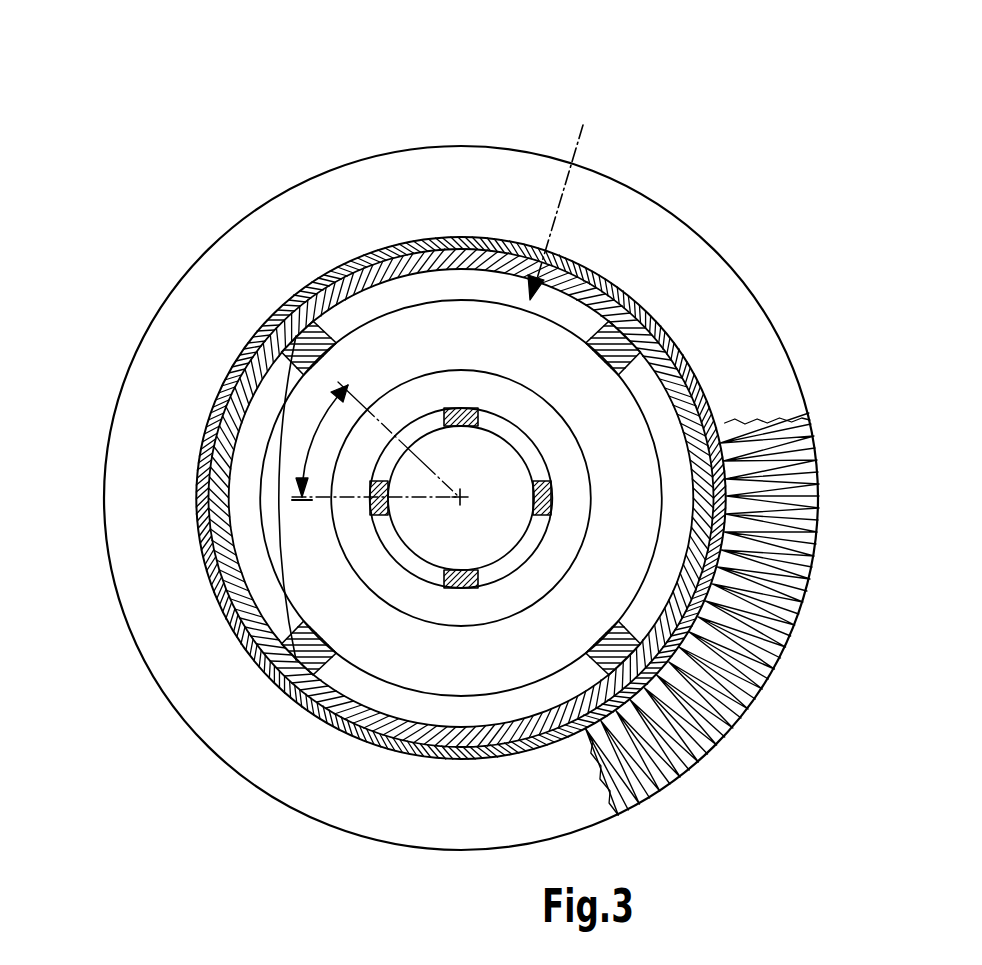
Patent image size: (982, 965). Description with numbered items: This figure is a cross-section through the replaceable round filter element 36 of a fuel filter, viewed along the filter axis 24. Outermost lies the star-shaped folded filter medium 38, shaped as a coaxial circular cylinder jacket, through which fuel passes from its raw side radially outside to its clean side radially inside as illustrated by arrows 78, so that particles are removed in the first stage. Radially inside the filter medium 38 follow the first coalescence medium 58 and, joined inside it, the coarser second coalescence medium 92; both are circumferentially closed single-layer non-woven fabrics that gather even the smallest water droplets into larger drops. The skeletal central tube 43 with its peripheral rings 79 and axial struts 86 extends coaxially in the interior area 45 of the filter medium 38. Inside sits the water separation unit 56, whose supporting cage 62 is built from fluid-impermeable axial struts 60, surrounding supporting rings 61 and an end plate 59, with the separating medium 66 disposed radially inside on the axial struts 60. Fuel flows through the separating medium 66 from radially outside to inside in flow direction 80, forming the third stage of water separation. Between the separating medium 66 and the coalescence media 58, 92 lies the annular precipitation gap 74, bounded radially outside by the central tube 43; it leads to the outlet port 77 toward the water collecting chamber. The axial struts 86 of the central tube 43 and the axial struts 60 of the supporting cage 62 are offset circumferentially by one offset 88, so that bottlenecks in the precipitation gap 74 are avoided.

The filter axis 24 is at (457, 500).
The filter element 36 is at (310, 120).
The filter medium 38 is at (830, 450).
The central tube 43 is at (666, 496).
The interior area 45 is at (288, 527).
The water separation unit 56 is at (433, 408).
The first coalescence medium 58 is at (262, 325).
The end plate 59 is at (430, 573).
The axial struts 60 is at (460, 427).
The supporting ring 61 is at (497, 598).
The supporting cage 62 is at (460, 612).
The separating medium 66 is at (540, 444).
The precipitation gap 74 is at (297, 565).
The outlet port 77 is at (613, 397).
The arrows 78 is at (568, 186).
The peripheral rings 79 is at (667, 423).
The flow direction 80 is at (494, 432).
The axial struts 86 is at (298, 350).
The offset 88 is at (305, 440).
The second coalescence medium 92 is at (205, 460).